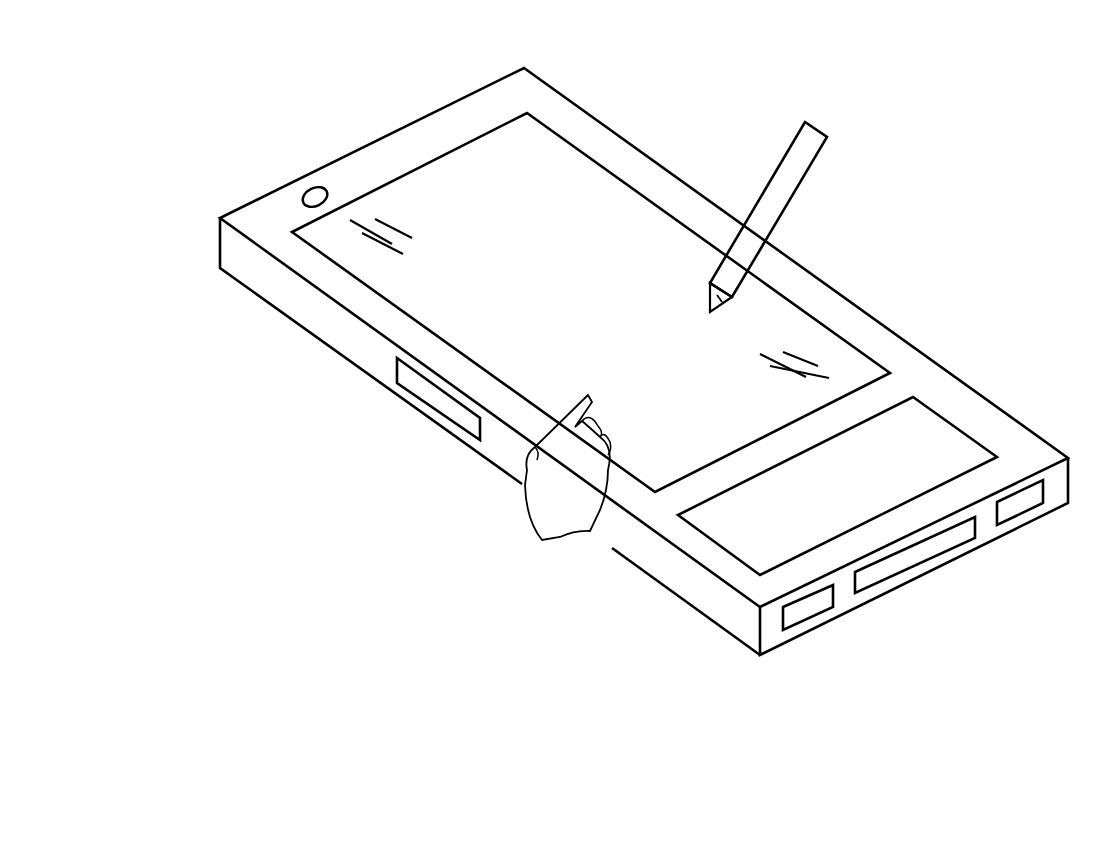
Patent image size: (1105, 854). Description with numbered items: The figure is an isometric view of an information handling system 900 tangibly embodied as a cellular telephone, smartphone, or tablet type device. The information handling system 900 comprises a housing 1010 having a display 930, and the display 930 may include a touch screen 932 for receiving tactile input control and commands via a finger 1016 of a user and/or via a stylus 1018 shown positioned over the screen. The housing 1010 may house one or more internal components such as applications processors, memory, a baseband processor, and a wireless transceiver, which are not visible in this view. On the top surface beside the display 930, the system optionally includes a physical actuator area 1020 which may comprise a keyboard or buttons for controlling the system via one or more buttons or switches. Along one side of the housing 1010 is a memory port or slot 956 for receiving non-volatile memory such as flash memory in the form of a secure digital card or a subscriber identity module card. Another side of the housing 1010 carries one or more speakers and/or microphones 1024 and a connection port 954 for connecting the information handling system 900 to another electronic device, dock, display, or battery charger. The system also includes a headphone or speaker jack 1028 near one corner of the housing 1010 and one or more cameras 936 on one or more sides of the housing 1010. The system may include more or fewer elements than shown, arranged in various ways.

The information handling system 900 is at (656, 99).
The housing 1010 is at (468, 93).
The headphone or speaker jack 1028 is at (248, 205).
The display 930 is at (502, 176).
The touch screen 932 is at (619, 305).
The cameras 936 is at (312, 189).
The stylus 1018 is at (790, 158).
The finger 1016 is at (590, 397).
The physical actuator area 1020 is at (928, 443).
The memory port or slot 956 is at (410, 397).
The connection port 954 is at (930, 562).
The speakers and/or microphones 1024 is at (817, 620).